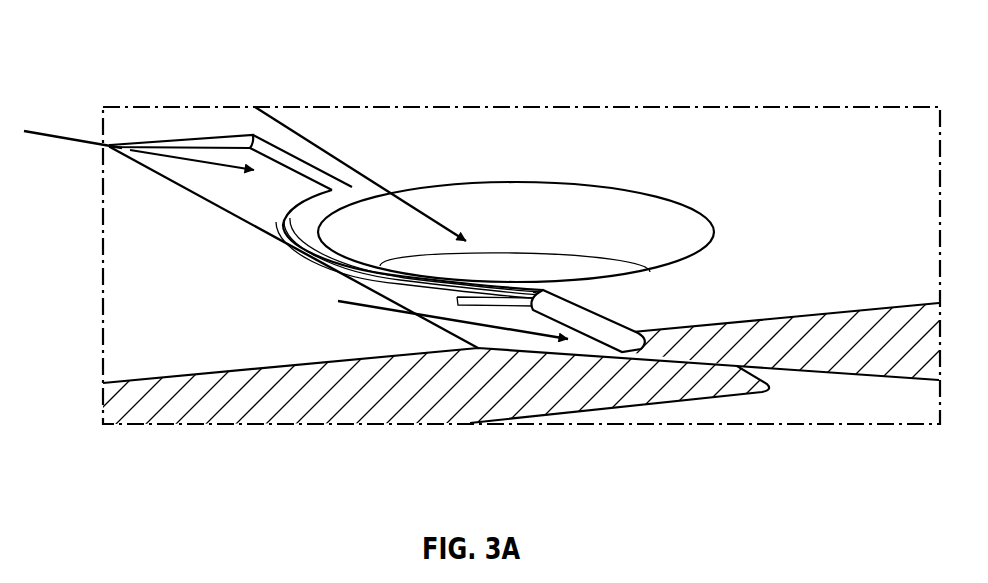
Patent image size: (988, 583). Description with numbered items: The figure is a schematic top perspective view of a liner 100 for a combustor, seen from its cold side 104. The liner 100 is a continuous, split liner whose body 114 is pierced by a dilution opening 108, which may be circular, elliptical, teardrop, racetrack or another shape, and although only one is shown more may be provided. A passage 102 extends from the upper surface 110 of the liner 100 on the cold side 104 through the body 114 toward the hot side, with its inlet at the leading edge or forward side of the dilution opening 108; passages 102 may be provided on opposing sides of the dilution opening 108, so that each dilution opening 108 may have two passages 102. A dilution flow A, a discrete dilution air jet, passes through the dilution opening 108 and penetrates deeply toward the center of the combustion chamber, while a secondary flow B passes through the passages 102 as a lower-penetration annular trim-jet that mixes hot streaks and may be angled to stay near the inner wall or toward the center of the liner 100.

The liner 100 is at (117, 50).
The passage 102 is at (248, 182).
The cold side 104 is at (485, 158).
The dilution opening 108 is at (535, 244).
The upper surface 110 is at (790, 138).
The body 114 is at (345, 403).
The dilution flow A is at (333, 156).
The secondary flow B is at (82, 144).